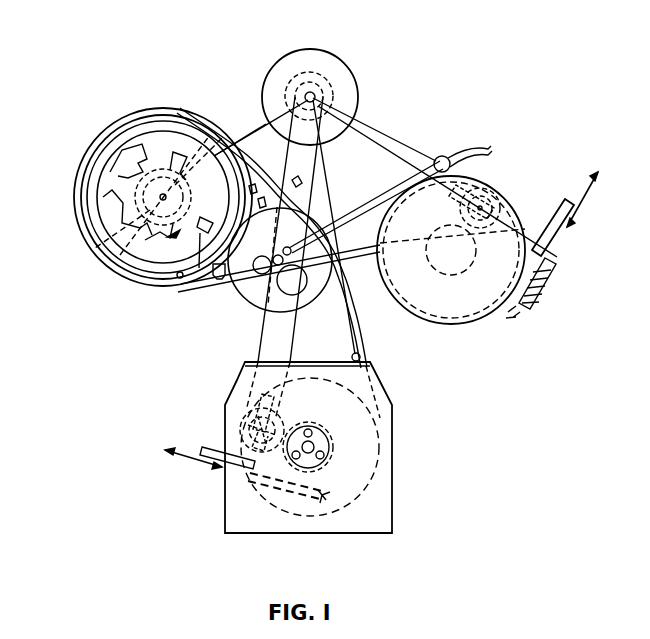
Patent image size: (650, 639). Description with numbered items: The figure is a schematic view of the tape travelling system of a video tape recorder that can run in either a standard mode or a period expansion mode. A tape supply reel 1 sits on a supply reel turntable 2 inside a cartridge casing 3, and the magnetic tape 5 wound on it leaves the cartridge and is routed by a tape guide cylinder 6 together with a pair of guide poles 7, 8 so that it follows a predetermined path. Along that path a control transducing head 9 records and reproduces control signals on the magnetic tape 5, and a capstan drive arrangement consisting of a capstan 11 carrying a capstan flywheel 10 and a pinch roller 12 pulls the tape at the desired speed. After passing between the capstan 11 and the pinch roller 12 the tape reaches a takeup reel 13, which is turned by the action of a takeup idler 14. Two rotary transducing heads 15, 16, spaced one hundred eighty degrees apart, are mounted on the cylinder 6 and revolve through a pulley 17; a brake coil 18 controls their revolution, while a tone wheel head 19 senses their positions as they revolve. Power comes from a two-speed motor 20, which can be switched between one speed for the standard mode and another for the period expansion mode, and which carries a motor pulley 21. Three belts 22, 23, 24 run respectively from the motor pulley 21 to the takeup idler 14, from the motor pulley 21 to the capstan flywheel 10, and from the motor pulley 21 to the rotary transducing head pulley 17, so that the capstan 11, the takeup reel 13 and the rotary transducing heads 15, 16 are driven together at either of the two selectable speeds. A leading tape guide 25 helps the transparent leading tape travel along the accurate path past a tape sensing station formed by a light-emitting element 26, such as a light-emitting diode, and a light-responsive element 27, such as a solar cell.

The tape supply reel 1 is at (363, 457).
The supply reel turntable 2 is at (318, 441).
The cartridge casing 3 is at (375, 515).
The magnetic tape 5 is at (165, 281).
The tape guide cylinder 6 is at (97, 223).
The guide pole 7 is at (178, 290).
The guide pole 8 is at (247, 164).
The control transducing head 9 is at (218, 280).
The capstan flywheel 10 is at (250, 296).
The capstan 11 is at (276, 256).
The pinch roller 12 is at (298, 288).
The takeup reel 13 is at (476, 305).
The takeup idler 14 is at (503, 197).
The rotary transducing head 15 is at (118, 272).
The rotary transducing head 16 is at (207, 137).
The pulley 17 is at (160, 165).
The brake coil 18 is at (118, 162).
The tone wheel head 19 is at (198, 280).
The two-speed motor 20 is at (330, 68).
The motor pulley 21 is at (318, 97).
The belt 22 is at (400, 136).
The belt 23 is at (357, 122).
The belt 24 is at (262, 128).
The leading tape guide 25 is at (369, 328).
The light-emitting element 26 is at (313, 197).
The light-responsive element 27 is at (300, 180).